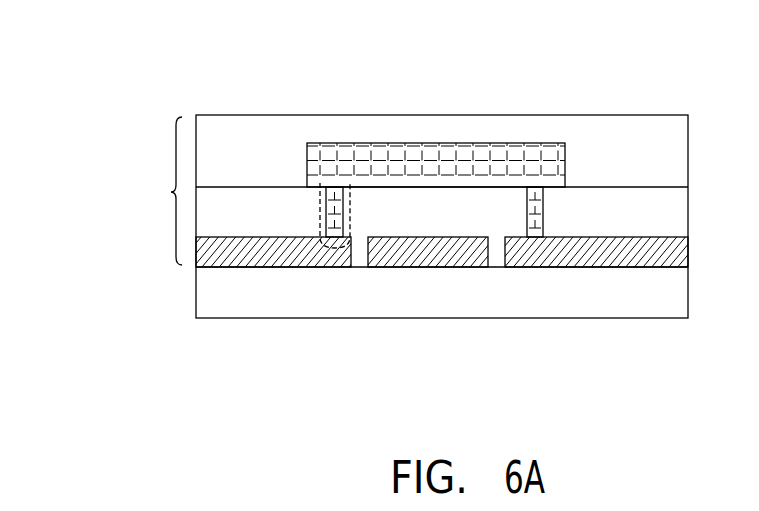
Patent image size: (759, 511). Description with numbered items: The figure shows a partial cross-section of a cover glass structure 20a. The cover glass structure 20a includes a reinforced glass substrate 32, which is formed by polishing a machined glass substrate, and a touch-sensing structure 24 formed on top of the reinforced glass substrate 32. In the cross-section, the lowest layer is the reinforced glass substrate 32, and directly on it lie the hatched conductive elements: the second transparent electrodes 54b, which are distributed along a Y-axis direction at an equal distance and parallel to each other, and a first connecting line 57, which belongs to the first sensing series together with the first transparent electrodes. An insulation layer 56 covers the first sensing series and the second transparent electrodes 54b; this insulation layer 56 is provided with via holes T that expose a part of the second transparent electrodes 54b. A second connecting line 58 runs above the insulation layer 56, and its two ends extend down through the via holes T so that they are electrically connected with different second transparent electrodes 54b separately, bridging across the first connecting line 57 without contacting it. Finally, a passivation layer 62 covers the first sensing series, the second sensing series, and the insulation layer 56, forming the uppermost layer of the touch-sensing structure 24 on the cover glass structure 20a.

The cover glass structure 20a is at (177, 42).
The touch-sensing structure 24 is at (156, 191).
The insulation layer 56 is at (272, 230).
The passivation layer 62 is at (457, 138).
The second connecting line 58 is at (513, 160).
The reinforced glass substrate 32 is at (464, 306).
The via hole T is at (351, 236).
The second transparent electrode 54b is at (255, 255).
The first connecting line 57 is at (392, 250).